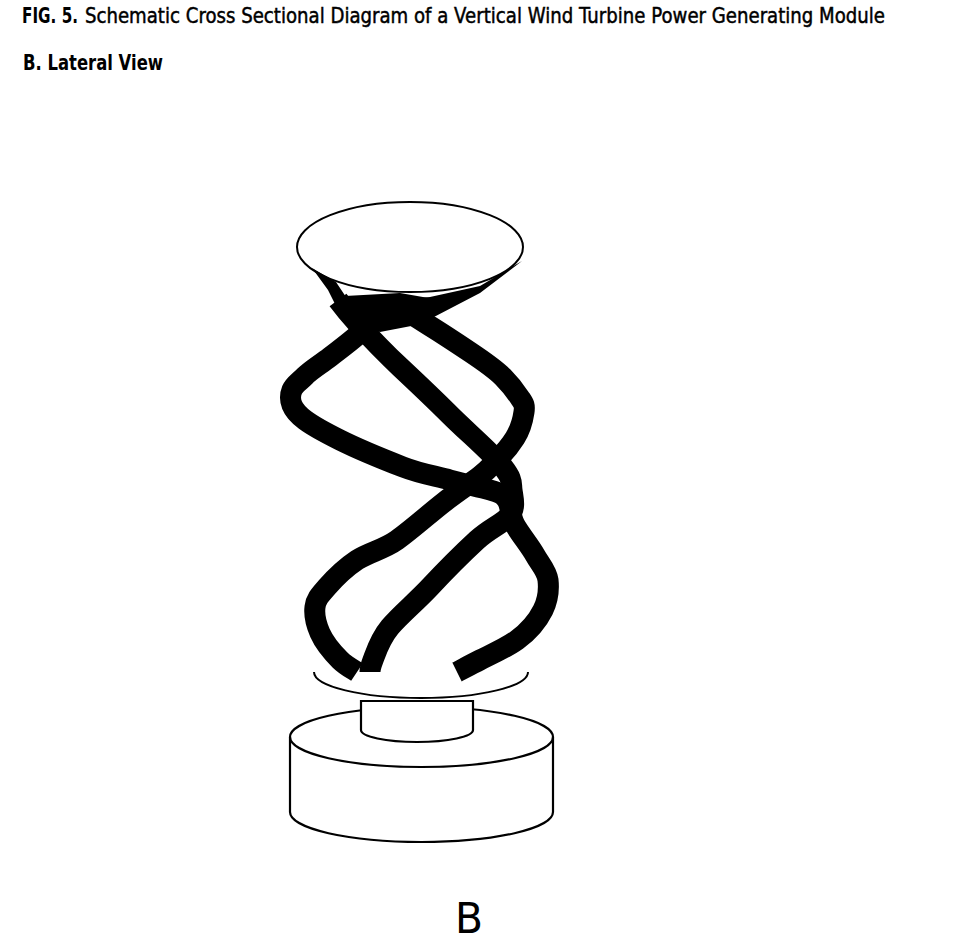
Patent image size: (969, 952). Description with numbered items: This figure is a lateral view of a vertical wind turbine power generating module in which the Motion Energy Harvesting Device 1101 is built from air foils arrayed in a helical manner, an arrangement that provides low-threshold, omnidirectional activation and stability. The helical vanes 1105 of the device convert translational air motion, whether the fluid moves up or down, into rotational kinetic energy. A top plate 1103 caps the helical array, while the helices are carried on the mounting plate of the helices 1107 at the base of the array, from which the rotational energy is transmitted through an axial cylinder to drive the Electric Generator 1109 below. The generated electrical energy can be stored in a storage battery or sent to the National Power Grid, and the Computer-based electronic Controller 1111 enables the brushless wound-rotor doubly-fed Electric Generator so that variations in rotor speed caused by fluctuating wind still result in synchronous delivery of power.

The Motion Energy Harvesting Device 1101 is at (440, 400).
The top plate 1103 is at (408, 247).
The helical vanes 1105 is at (556, 393).
The mounting plate of the helices 1107 is at (310, 658).
The Electric Generator 1109 is at (477, 707).
The Computer-based electronic Controller 1111 is at (310, 788).